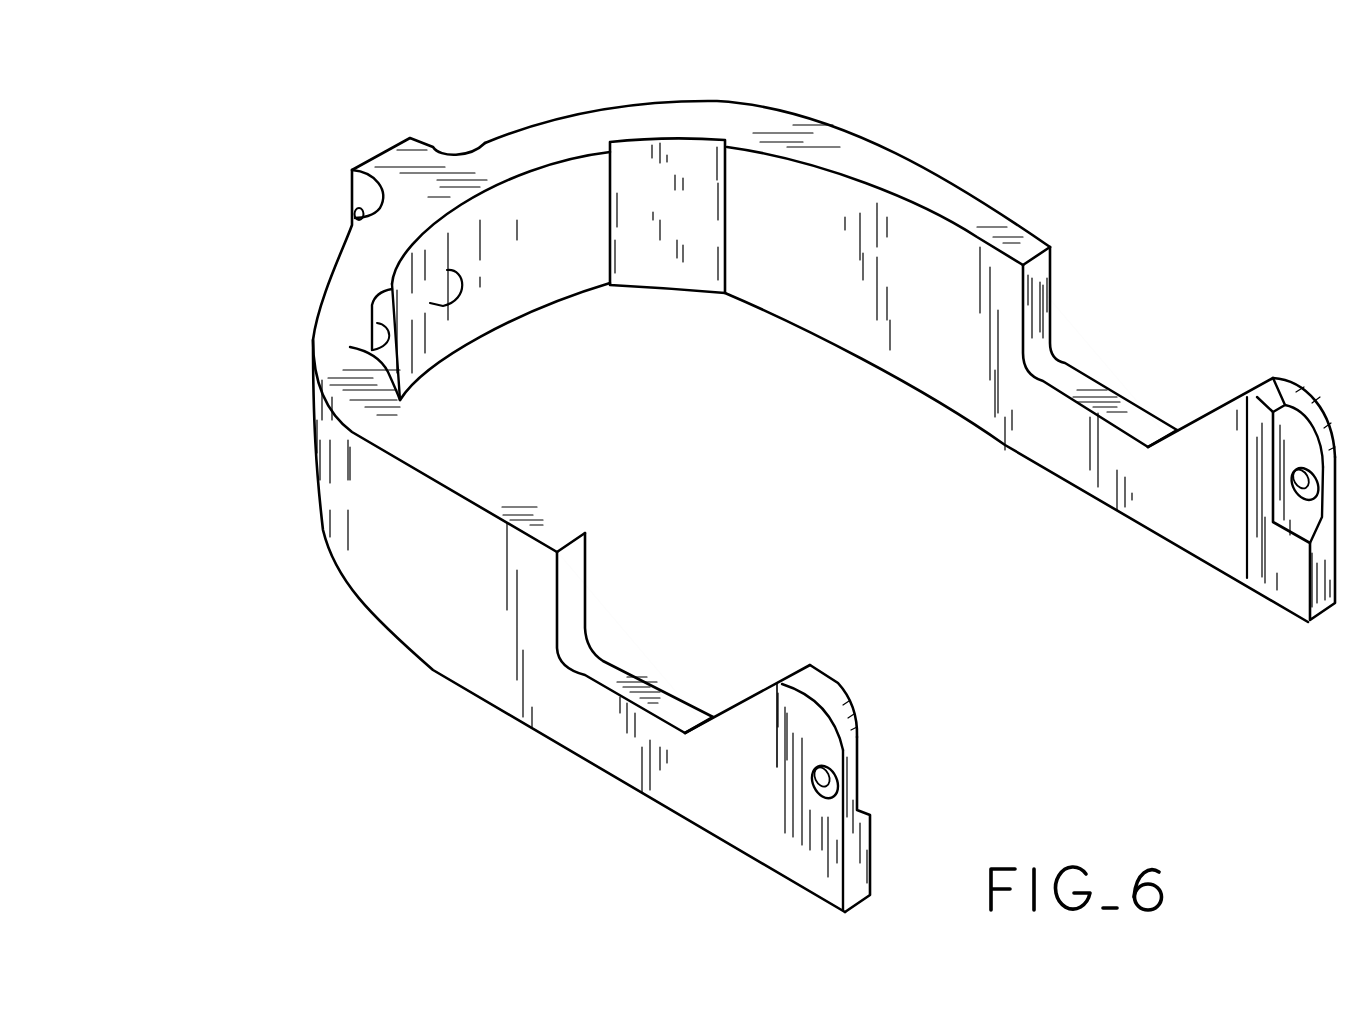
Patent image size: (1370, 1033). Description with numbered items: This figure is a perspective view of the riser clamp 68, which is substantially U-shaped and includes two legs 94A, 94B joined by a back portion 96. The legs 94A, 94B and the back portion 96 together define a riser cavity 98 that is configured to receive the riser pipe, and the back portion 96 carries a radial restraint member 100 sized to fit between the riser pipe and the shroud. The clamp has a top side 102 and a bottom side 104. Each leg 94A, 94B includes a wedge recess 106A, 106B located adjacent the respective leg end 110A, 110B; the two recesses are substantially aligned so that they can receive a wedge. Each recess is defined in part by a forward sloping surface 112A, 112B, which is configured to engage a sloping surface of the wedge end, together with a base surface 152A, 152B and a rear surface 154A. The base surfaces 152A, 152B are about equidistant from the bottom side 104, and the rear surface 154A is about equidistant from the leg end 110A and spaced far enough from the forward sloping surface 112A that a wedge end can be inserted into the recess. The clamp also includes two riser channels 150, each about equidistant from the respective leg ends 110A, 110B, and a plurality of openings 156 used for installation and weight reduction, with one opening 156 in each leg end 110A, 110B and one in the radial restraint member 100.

The riser clamp 68 is at (752, 80).
The leg 94A is at (820, 867).
The leg 94B is at (1287, 590).
The back portion 96 is at (535, 140).
The riser cavity 98 is at (413, 303).
The radial restraint member 100 is at (408, 133).
The top side 102 is at (855, 148).
The bottom side 104 is at (807, 327).
The wedge recess 106A is at (620, 608).
The wedge recess 106B is at (1082, 315).
The leg end 110A is at (820, 675).
The leg end 110B is at (1280, 388).
The forward sloping surface 112A is at (760, 695).
The forward sloping surface 112B is at (1210, 412).
The riser channel 150 is at (690, 160).
The base surface 152A is at (650, 697).
The base surface 152B is at (1122, 398).
The rear surface 154A is at (1050, 280).
The opening 156 is at (350, 212).